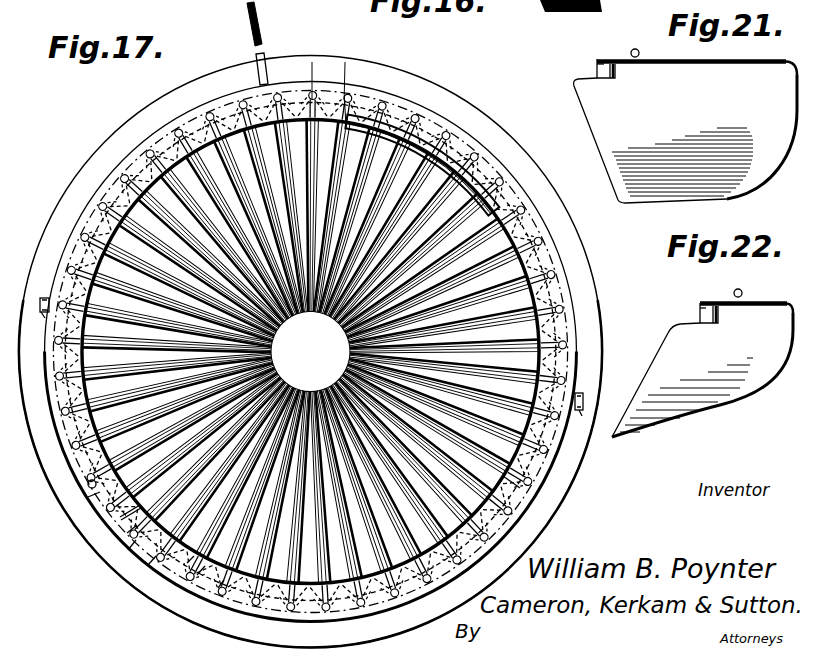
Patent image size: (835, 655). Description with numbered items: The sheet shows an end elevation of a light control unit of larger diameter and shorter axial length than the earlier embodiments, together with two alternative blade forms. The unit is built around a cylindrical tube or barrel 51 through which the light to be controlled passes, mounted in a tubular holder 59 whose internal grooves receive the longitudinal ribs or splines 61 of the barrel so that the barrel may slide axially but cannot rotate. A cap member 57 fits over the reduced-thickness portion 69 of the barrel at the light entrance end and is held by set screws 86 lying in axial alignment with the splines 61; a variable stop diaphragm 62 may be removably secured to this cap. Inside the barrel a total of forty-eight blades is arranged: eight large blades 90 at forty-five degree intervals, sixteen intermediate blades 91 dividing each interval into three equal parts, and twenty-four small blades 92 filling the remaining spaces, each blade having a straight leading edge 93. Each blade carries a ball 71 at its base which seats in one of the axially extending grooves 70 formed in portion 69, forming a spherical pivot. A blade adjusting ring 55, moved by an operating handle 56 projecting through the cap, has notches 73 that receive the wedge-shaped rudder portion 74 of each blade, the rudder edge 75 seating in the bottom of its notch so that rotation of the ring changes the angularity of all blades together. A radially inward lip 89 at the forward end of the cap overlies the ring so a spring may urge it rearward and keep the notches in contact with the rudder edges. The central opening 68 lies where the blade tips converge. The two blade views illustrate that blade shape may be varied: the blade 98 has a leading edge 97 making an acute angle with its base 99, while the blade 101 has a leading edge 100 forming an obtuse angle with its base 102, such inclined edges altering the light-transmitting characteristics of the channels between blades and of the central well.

In FIG. 17, the cylindrical tube or barrel 51 is at (143, 155).
In FIG. 17, the blade adjusting ring 55 is at (127, 533).
In FIG. 17, the operating handle 56 is at (262, 33).
In FIG. 17, the cap member 57 is at (132, 170).
In FIG. 17, the cylindrical or tubular holder 59 is at (98, 183).
In FIG. 17, the ribs or splines 61 is at (44, 298).
In FIG. 17, the variable stop diaphragm 62 is at (380, 140).
In FIG. 17, the hub 68 is at (306, 373).
In FIG. 17, the portion of reduced wall thickness 69 is at (170, 143).
In FIG. 17, the axially extending grooves 70 is at (88, 497).
In FIG. 17, the ball 71 is at (88, 485).
In FIG. 21, the ball 71 is at (631, 51).
In FIG. 22, the ball 71 is at (733, 292).
In FIG. 17, the notches 73 is at (345, 62).
In FIG. 21, the wedge-shaped rudder portion 74 is at (606, 79).
In FIG. 22, the wedge-shaped rudder portion 74 is at (708, 316).
In FIG. 21, the rudder edge 75 is at (596, 67).
In FIG. 22, the rudder edge 75 is at (698, 313).
In FIG. 17, the set screws 86 is at (41, 312).
In FIG. 17, the radially inwardly extending lip 89 is at (520, 488).
In FIG. 17, the large blades 90 is at (128, 550).
In FIG. 17, the intermediate blades 91 is at (187, 563).
In FIG. 17, the small blades 92 is at (148, 565).
In FIG. 17, the straight leading edge 93 is at (121, 520).
In FIG. 21, the leading edge 97 is at (593, 143).
In FIG. 21, the blade 98 is at (750, 153).
In FIG. 21, the blade base 99 is at (693, 60).
In FIG. 22, the leading edge 100 is at (660, 355).
In FIG. 22, the blade 101 is at (735, 385).
In FIG. 22, the blade base 102 is at (763, 301).